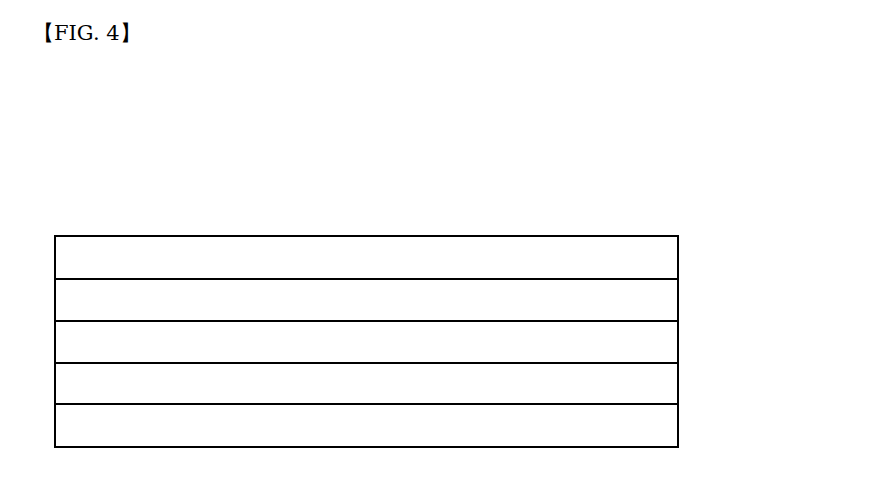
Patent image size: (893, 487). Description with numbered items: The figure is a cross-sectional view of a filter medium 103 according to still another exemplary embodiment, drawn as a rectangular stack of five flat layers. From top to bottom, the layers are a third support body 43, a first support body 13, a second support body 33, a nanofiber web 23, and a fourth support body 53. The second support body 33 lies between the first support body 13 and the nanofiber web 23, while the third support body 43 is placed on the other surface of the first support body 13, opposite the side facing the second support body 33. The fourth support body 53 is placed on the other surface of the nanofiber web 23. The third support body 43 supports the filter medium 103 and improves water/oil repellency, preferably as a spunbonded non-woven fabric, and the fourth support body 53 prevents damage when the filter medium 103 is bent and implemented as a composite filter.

The filter medium 103 is at (157, 158).
The third support body 43 is at (672, 260).
The first support body 13 is at (672, 302).
The second support body 33 is at (672, 344).
The nanofiber web 23 is at (672, 385).
The fourth support body 53 is at (672, 427).